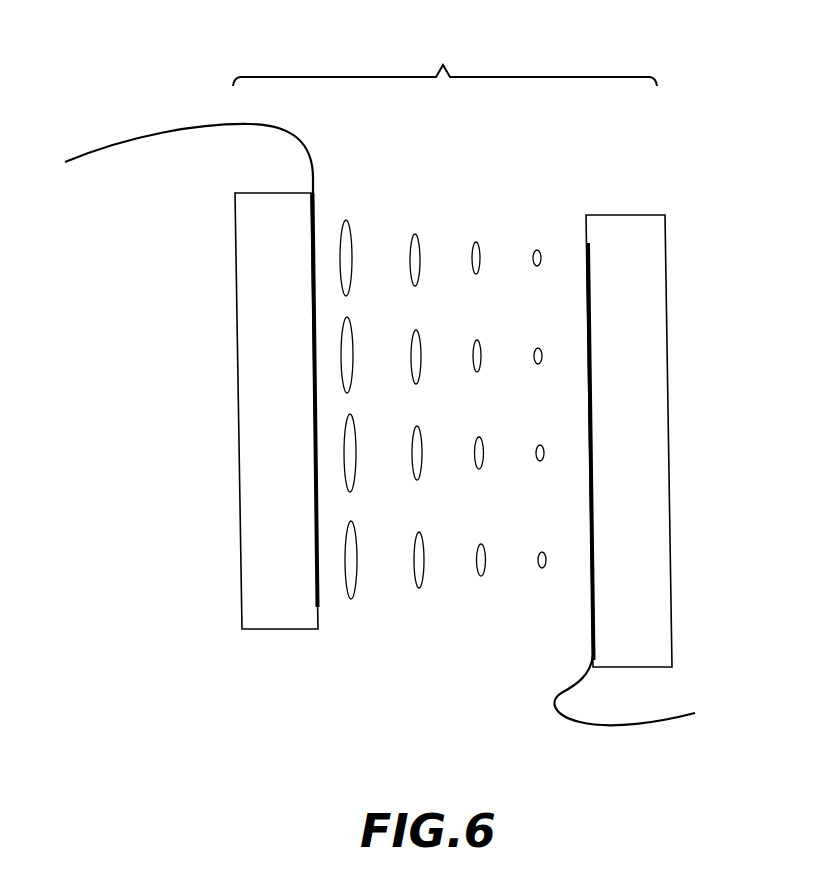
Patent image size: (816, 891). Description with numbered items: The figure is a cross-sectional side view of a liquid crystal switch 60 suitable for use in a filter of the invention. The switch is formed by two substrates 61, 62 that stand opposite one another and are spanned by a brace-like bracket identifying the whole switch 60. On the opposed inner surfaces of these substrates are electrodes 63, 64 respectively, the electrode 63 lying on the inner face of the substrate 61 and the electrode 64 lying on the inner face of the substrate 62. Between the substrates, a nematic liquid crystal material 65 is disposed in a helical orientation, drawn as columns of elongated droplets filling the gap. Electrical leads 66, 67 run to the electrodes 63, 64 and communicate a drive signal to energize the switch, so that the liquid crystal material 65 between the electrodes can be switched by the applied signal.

The liquid crystal switch 60 is at (445, 57).
The substrate 61 is at (248, 192).
The substrate 62 is at (642, 213).
The electrode 63 is at (317, 600).
The electrode 64 is at (595, 593).
The nematic liquid crystal material 65 is at (412, 237).
The electrical lead 66 is at (165, 133).
The electrical lead 67 is at (563, 678).